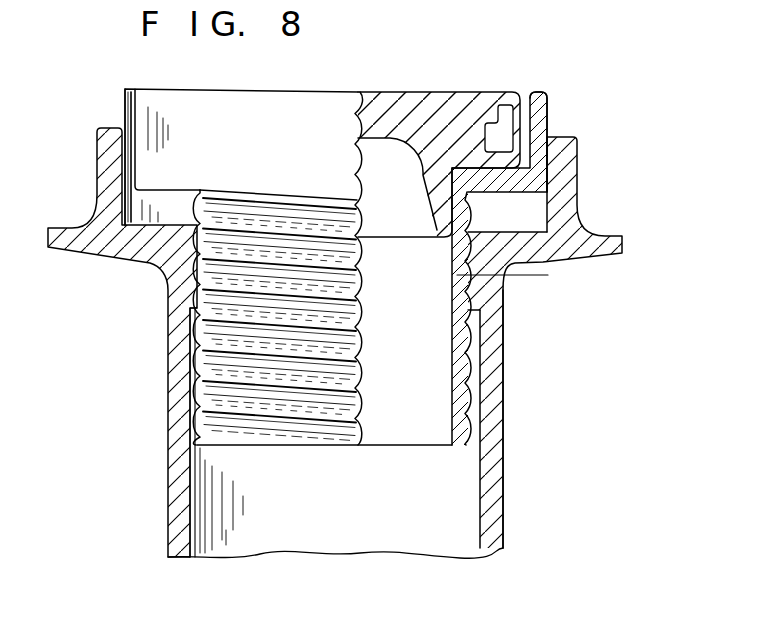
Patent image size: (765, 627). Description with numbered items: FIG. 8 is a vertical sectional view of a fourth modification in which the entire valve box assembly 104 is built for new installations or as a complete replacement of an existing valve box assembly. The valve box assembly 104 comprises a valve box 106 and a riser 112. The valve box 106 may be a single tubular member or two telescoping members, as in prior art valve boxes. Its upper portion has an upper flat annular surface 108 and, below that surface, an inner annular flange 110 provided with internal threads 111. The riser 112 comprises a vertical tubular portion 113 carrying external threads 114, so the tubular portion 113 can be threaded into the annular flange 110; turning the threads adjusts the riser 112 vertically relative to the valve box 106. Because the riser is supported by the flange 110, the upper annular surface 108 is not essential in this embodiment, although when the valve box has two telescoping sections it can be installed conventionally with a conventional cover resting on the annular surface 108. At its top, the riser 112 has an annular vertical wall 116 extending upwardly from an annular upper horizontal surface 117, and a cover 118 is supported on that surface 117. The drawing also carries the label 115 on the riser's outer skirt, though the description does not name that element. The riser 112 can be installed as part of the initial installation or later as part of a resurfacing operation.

The valve box assembly 104 is at (354, 339).
The valve box 106 is at (497, 421).
The upper flat annular surface 108 is at (393, 280).
The inner annular flange 110 is at (477, 293).
The internal threads 111 is at (462, 262).
The riser 112 is at (288, 245).
The vertical tubular portion 113 is at (310, 440).
The external threads 114 is at (197, 355).
The cap skirt 115 is at (147, 106).
The annular vertical wall 116 is at (545, 103).
The annular upper horizontal surface 117 is at (531, 137).
The cover 118 is at (432, 113).